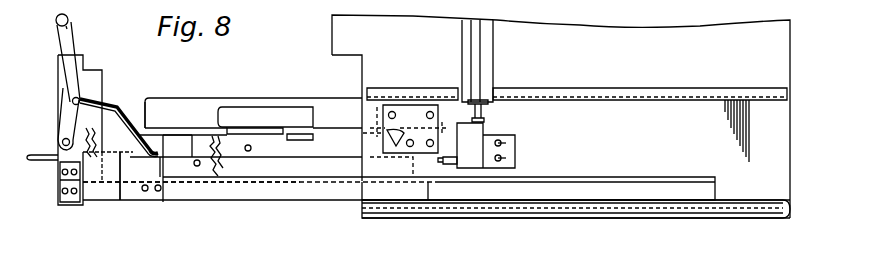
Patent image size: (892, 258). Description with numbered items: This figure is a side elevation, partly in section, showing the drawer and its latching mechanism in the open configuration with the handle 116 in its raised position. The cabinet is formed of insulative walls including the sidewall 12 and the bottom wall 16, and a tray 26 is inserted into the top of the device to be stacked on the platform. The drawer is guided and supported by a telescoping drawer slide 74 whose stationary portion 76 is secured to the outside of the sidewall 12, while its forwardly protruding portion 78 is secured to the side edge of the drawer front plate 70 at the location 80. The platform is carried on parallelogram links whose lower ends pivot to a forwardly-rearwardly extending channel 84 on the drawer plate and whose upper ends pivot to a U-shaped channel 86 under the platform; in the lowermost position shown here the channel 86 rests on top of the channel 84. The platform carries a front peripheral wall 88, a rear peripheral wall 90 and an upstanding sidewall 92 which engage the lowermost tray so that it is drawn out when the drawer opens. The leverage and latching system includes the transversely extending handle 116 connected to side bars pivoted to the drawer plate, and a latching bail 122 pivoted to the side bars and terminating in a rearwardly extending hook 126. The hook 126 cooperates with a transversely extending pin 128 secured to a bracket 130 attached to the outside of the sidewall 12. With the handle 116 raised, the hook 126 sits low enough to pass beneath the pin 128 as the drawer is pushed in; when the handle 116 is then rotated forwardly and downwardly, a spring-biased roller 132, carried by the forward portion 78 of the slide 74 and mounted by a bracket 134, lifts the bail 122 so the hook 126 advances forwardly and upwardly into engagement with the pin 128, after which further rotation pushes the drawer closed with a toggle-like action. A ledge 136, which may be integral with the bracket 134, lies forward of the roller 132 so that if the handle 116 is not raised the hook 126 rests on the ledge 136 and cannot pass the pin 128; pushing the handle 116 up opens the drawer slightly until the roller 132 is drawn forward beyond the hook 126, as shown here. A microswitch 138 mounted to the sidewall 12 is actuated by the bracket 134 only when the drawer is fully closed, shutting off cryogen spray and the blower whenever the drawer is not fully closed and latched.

The sidewall 12 is at (604, 71).
The bottom wall 16 is at (662, 221).
The tray 26 is at (274, 97).
The drawer front plate 70 is at (55, 181).
The drawer slide 74 is at (238, 191).
The stationary portion 76 is at (573, 198).
The forwardly protruding portion 78 is at (182, 190).
The securement 80 is at (73, 202).
The channel 84 is at (308, 167).
The U-shaped channel 86 is at (297, 150).
The front peripheral wall 88 is at (141, 130).
The rear peripheral wall 90 is at (455, 128).
The sidewall 92 is at (208, 128).
The handle 116 is at (71, 20).
The latching bail 122 is at (114, 101).
The hook 126 is at (172, 132).
The pin 128 is at (380, 125).
The bracket 130 is at (412, 110).
The roller 132 is at (120, 176).
The bracket 134 is at (157, 178).
The ledge 136 is at (103, 153).
The microswitch 138 is at (447, 164).